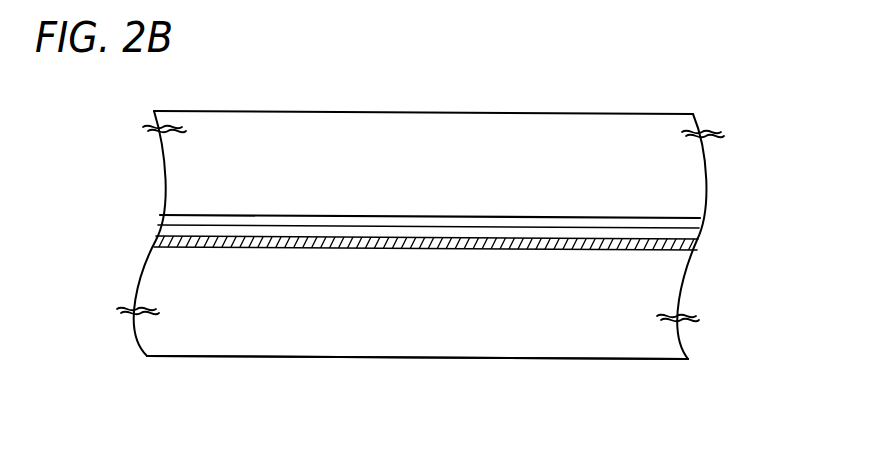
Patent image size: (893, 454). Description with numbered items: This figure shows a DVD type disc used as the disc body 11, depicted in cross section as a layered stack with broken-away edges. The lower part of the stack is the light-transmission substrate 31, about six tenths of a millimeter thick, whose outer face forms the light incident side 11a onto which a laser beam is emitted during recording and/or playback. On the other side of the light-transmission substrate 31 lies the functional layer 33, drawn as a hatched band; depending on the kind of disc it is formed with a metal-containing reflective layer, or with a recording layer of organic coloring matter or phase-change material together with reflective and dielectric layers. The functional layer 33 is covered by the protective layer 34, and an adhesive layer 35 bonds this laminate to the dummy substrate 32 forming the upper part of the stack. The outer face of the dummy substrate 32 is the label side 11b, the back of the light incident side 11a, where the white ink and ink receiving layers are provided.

The disc body 11 is at (325, 92).
The light incident side 11a is at (367, 358).
The label side 11b is at (593, 111).
The light-transmission substrate 31 is at (672, 288).
The dummy substrate 32 is at (683, 162).
The functional layer 33 is at (695, 247).
The protective layer 34 is at (687, 237).
The adhesive layer 35 is at (697, 226).